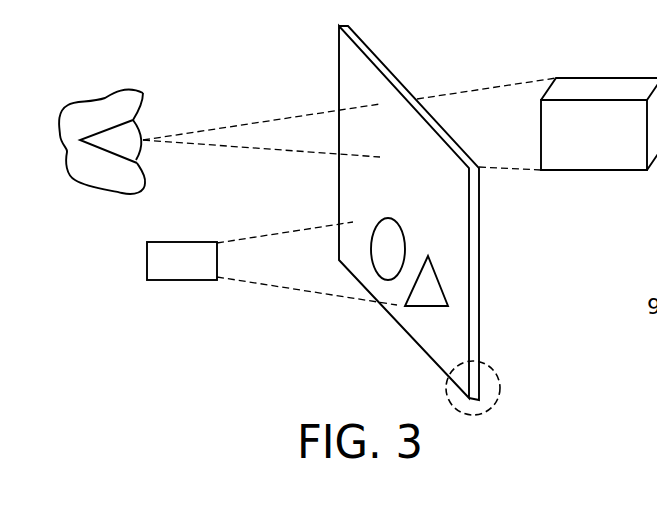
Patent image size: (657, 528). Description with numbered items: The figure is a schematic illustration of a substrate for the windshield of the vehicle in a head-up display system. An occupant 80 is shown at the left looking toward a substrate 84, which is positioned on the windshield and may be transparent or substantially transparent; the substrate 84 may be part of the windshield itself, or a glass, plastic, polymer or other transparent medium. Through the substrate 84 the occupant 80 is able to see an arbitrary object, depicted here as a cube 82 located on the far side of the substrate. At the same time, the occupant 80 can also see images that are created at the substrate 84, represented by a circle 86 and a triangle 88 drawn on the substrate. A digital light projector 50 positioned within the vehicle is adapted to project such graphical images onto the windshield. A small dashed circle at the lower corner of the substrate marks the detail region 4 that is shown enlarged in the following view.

The occupant 80 is at (122, 99).
The cube 82 is at (607, 147).
The substrate 84 is at (383, 67).
The circle 86 is at (382, 248).
The triangle 88 is at (428, 300).
The digital light projector 50 is at (195, 272).
The detail region of FIG. 4 is at (493, 367).